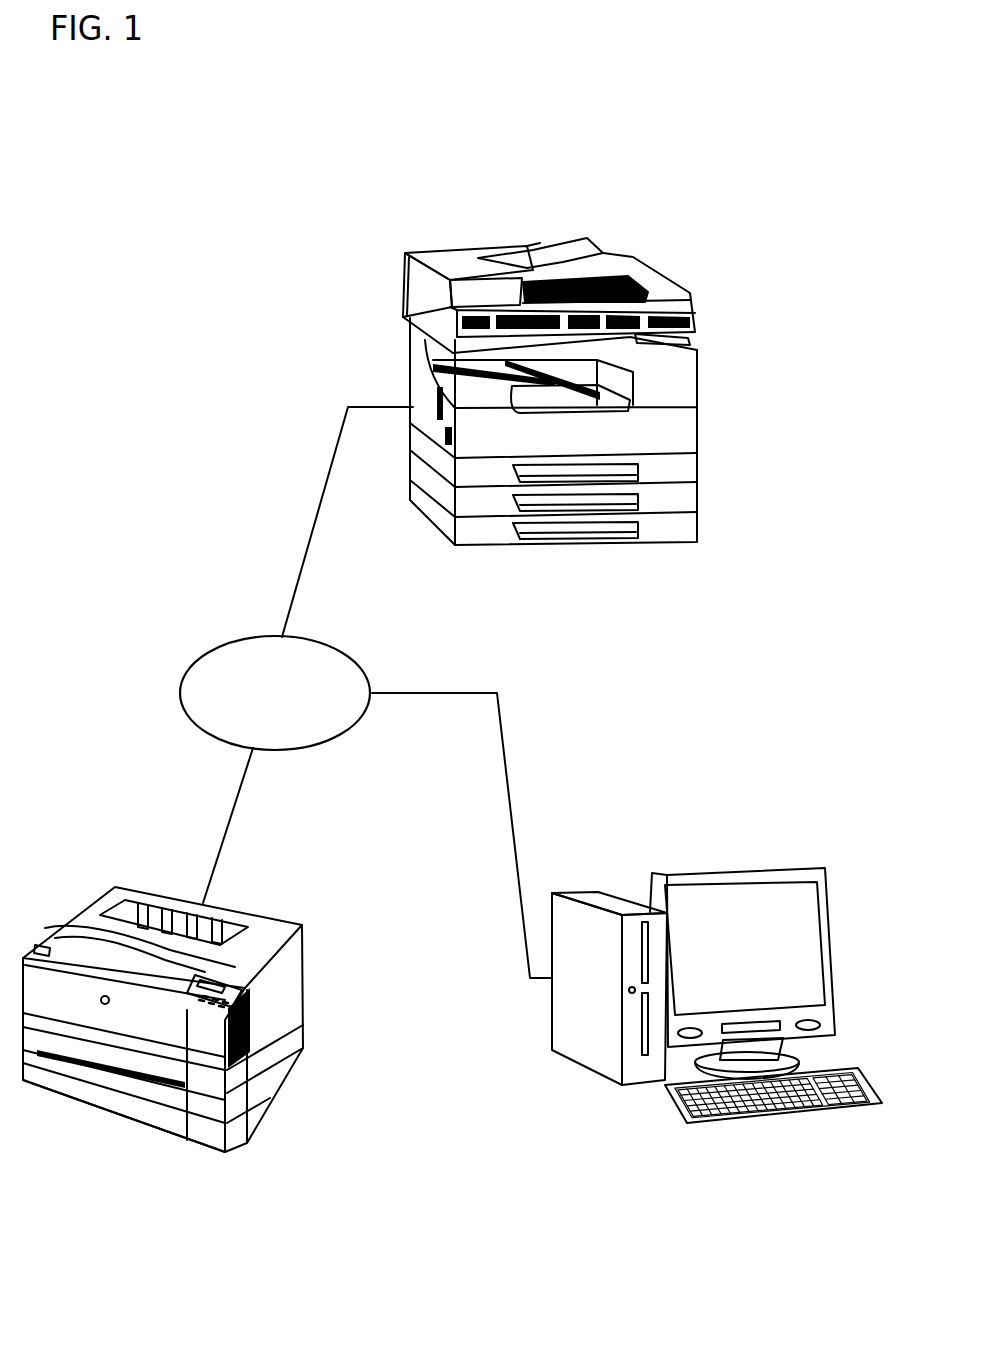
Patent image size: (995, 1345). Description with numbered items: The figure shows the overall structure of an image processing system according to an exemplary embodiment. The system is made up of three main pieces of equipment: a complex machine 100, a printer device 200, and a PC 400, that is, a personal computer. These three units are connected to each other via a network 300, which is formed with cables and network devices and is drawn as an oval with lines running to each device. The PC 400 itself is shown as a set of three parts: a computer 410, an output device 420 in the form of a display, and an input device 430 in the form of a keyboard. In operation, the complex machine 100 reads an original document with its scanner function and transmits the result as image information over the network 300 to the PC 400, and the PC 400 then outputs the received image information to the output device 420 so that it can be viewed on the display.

The complex machine 100 is at (453, 245).
The printer device 200 is at (237, 915).
The network 300 is at (357, 658).
The PC 400 is at (787, 1248).
The computer 410 is at (577, 1040).
The output device 420 is at (693, 873).
The input device 430 is at (712, 1117).